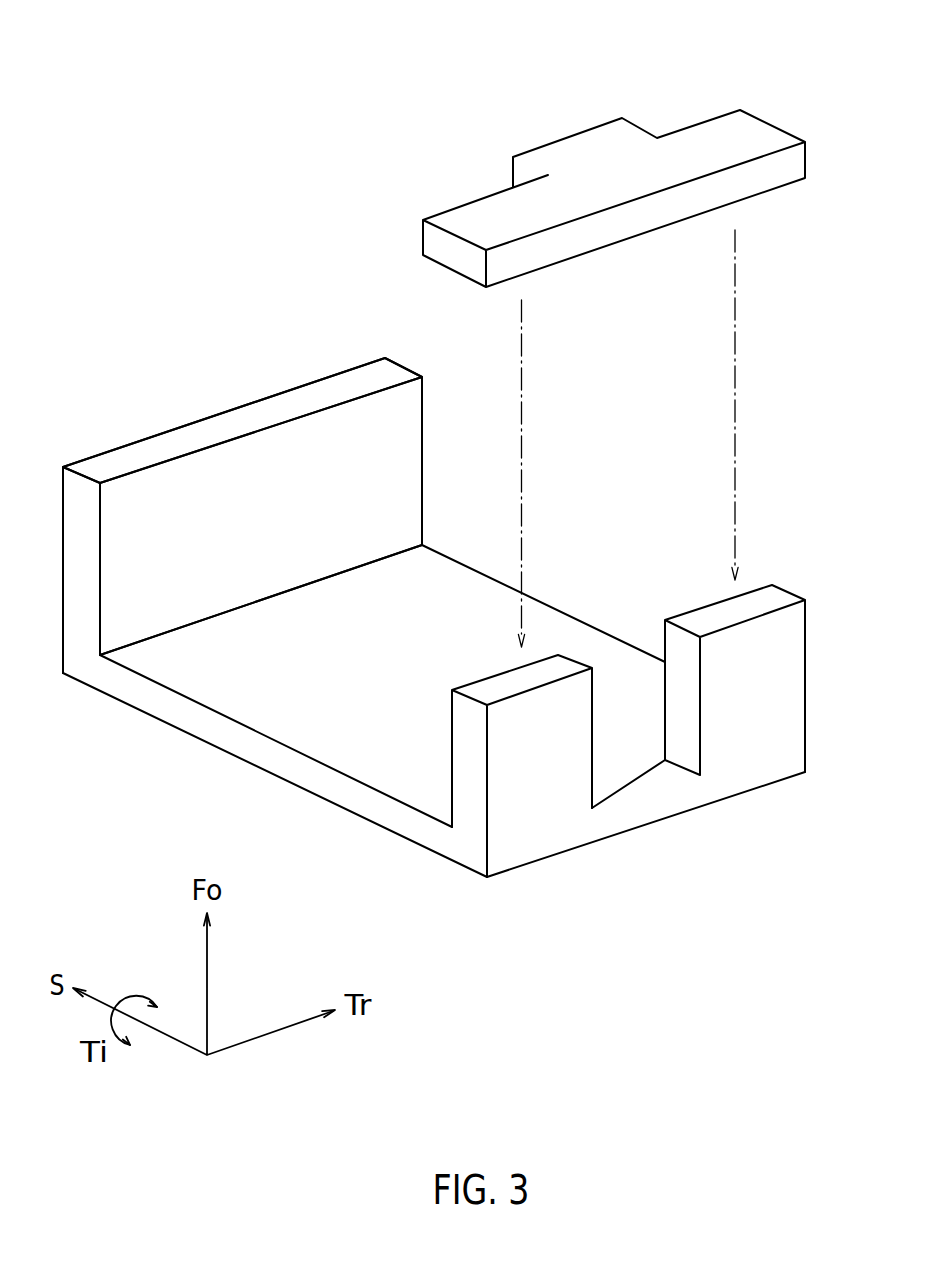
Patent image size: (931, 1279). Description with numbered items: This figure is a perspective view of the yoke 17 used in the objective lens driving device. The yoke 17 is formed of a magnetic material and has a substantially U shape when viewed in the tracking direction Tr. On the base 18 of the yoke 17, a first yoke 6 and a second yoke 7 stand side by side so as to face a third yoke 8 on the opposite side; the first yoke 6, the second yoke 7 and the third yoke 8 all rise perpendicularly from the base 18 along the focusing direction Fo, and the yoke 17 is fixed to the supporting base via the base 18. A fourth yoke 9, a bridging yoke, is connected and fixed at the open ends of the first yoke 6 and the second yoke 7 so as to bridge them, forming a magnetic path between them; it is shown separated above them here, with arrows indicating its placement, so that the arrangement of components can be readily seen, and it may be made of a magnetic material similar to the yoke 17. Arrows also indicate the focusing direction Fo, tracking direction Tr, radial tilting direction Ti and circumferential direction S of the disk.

The yoke 17 is at (187, 177).
The third yoke 8 is at (207, 430).
The base 18 is at (252, 748).
The first yoke 6 is at (532, 770).
The second yoke 7 is at (753, 723).
The fourth yoke 9 is at (745, 128).